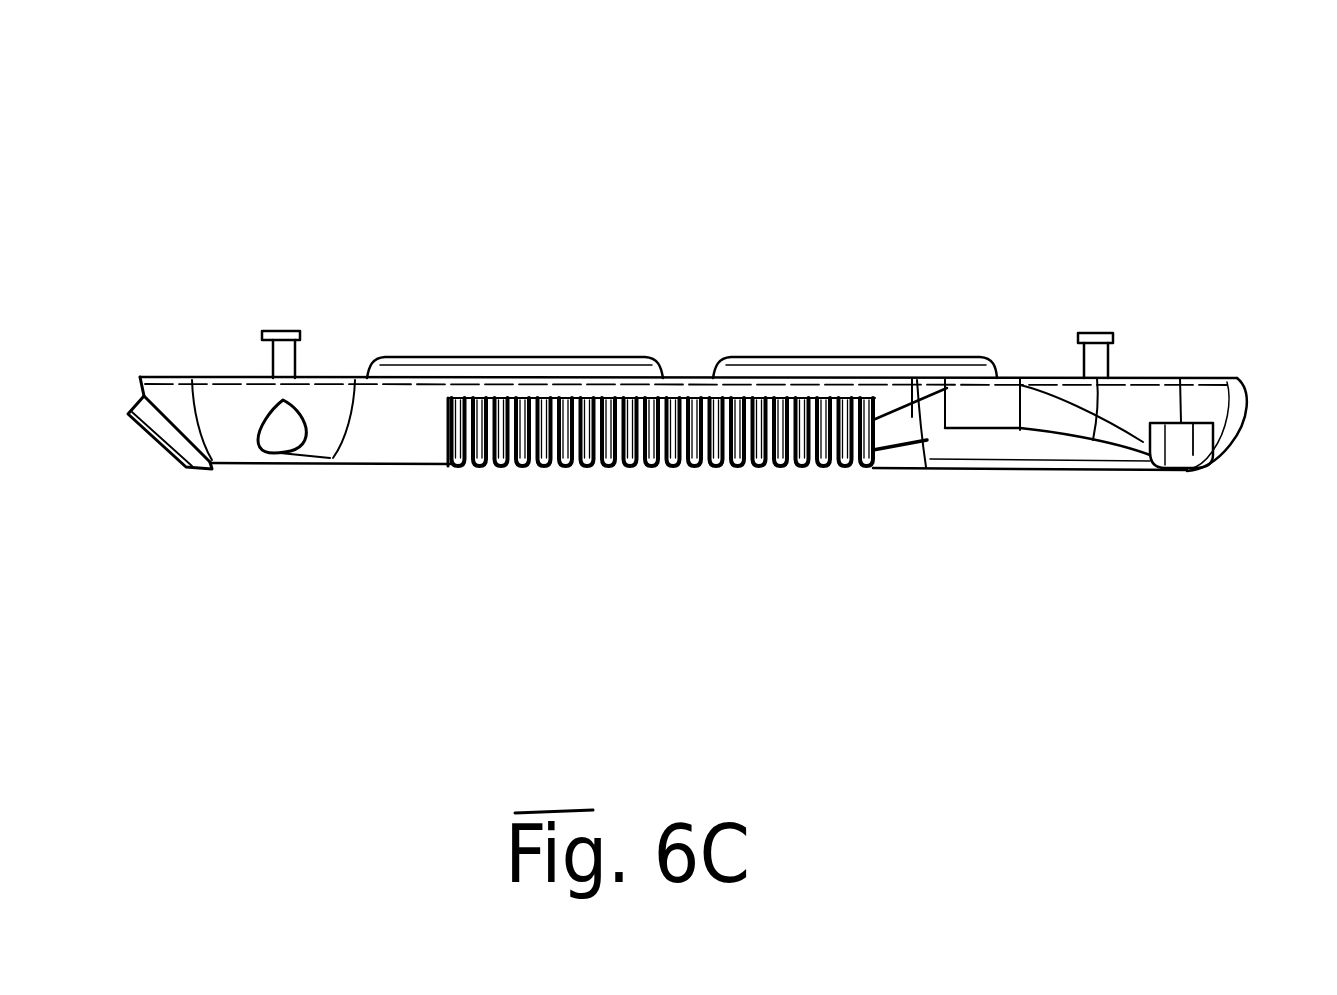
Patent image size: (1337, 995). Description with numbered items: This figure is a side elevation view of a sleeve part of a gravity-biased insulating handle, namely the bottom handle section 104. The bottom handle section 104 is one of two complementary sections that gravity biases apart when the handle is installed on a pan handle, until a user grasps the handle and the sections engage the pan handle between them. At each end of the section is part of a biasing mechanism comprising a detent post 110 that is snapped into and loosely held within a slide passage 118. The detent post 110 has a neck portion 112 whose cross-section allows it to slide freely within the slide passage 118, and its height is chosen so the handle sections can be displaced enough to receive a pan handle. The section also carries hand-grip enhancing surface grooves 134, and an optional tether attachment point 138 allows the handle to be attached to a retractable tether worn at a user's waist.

The bottom handle section 104 is at (232, 270).
The detent post 110 is at (1080, 337).
The neck portion 112 is at (303, 348).
The slide passage 118 is at (285, 432).
The surface grooves 134 is at (548, 462).
The tether attachment point 138 is at (1200, 460).